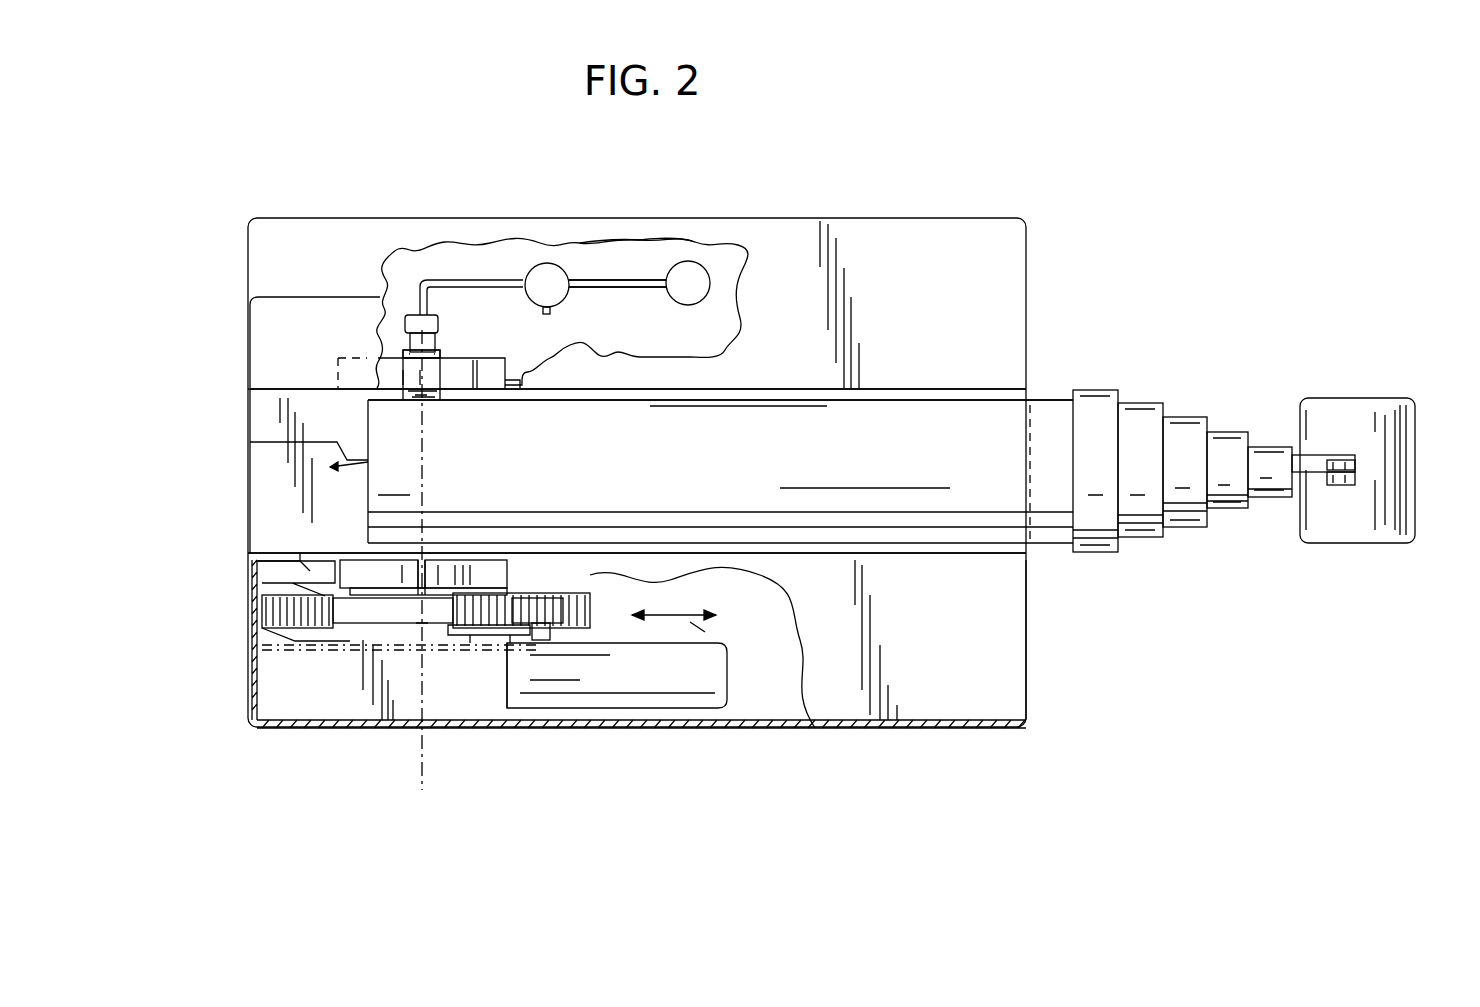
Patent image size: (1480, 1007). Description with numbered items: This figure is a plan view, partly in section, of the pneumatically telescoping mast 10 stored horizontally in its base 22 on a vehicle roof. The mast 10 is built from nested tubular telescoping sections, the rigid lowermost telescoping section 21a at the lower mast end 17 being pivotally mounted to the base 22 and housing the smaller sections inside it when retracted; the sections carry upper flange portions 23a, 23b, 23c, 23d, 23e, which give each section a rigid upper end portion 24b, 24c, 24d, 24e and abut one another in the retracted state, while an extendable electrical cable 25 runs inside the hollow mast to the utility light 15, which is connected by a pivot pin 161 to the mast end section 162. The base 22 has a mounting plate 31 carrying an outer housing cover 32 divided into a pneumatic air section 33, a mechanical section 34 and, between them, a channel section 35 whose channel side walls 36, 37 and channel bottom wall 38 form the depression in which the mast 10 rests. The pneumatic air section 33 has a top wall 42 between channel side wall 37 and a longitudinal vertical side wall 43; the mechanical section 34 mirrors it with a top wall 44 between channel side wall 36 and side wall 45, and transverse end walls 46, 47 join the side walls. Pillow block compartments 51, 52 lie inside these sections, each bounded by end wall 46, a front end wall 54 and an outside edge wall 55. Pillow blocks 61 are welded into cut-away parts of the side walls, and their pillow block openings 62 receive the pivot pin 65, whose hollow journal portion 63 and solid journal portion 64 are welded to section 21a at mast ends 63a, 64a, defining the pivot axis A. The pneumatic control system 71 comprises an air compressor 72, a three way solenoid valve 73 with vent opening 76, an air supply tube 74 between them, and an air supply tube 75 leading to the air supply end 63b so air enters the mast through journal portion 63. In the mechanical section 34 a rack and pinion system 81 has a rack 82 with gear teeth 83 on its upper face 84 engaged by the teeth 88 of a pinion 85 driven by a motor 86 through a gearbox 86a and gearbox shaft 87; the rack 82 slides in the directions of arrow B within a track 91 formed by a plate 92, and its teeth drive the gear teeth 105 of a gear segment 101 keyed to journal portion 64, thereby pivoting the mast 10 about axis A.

The pneumatically telescoping mast 10 is at (956, 399).
The utility light 15 is at (1402, 432).
The lower mast end 17 is at (722, 418).
The telescoping section 21a is at (1043, 537).
The base 22 is at (952, 216).
The upper flange portion 23a is at (1095, 389).
The upper flange portion 23b is at (1130, 402).
The upper flange portion 23c is at (1180, 416).
The upper flange portion 23d is at (1225, 431).
The upper flange portion 23e is at (1265, 446).
The rigid upper end portion 24b is at (1152, 540).
The rigid upper end portion 24c is at (1200, 528).
The rigid upper end portion 24d is at (1248, 508).
The rigid upper end portion 24e is at (1108, 553).
The electrical cable 25 is at (326, 461).
The mounting plate 31 is at (770, 700).
The outer housing cover 32 is at (896, 216).
The pneumatic air section 33 is at (796, 229).
The mechanical section 34 is at (856, 713).
The channel section 35 is at (260, 466).
The channel side wall 36 is at (260, 546).
The channel side wall 37 is at (273, 390).
The channel bottom wall 38 is at (268, 490).
The top wall 42 is at (611, 235).
The longitudinal vertical side wall 43 is at (646, 228).
The top wall 44 is at (952, 700).
The longitudinal vertical side wall 45 is at (930, 730).
The transverse end wall 46 is at (256, 700).
The transverse end wall 47 is at (1027, 690).
The pillow block compartment 51 is at (244, 320).
The pillow block compartment 52 is at (260, 572).
The front end wall 54 is at (604, 364).
The outside edge wall 55 is at (295, 296).
The pillow block 61 is at (500, 380).
The pillow block opening 62 is at (433, 402).
The journal portion 63 is at (443, 357).
The mast end 63a is at (410, 404).
The air supply end 63b is at (438, 316).
The journal portion 64 is at (432, 630).
The mast end 64a is at (440, 557).
The pivot pin 65 is at (400, 346).
The pneumatic control system 71 is at (655, 258).
The air compressor 72 is at (702, 267).
The three way solenoid valve 73 is at (545, 262).
The air supply tube 74 is at (600, 279).
The air supply tube 75 is at (490, 280).
The vent opening 76 is at (553, 311).
The rack and pinion system 81 is at (268, 632).
The rack 82 is at (293, 642).
The gear teeth 83 is at (262, 616).
The upper face 84 is at (278, 634).
The pinion 85 is at (557, 582).
The motor 86 is at (683, 696).
The gearbox 86a is at (562, 700).
The gearbox shaft 87 is at (541, 642).
The teeth 88 is at (572, 612).
The track 91 is at (370, 580).
The plate 92 is at (363, 642).
The gear segment 101 is at (330, 582).
The gear teeth 105 is at (262, 583).
The pivot pin 161 is at (1337, 455).
The mast end section 162 is at (1315, 455).
The pivot axis A is at (420, 770).
The arrow B is at (705, 632).